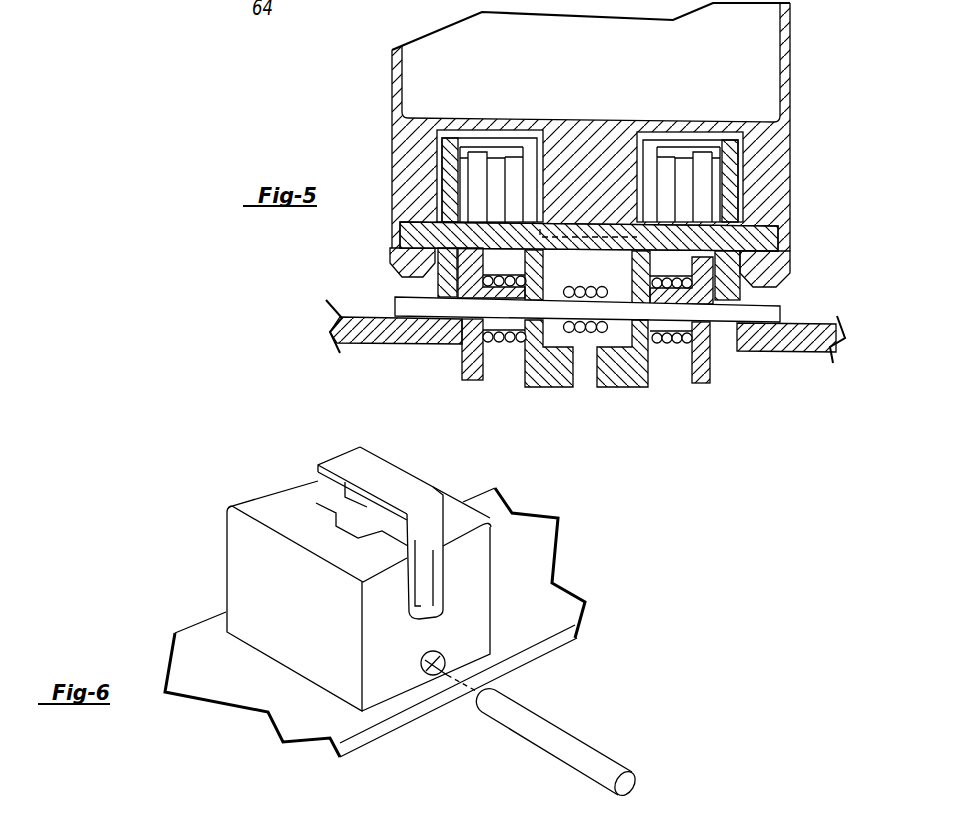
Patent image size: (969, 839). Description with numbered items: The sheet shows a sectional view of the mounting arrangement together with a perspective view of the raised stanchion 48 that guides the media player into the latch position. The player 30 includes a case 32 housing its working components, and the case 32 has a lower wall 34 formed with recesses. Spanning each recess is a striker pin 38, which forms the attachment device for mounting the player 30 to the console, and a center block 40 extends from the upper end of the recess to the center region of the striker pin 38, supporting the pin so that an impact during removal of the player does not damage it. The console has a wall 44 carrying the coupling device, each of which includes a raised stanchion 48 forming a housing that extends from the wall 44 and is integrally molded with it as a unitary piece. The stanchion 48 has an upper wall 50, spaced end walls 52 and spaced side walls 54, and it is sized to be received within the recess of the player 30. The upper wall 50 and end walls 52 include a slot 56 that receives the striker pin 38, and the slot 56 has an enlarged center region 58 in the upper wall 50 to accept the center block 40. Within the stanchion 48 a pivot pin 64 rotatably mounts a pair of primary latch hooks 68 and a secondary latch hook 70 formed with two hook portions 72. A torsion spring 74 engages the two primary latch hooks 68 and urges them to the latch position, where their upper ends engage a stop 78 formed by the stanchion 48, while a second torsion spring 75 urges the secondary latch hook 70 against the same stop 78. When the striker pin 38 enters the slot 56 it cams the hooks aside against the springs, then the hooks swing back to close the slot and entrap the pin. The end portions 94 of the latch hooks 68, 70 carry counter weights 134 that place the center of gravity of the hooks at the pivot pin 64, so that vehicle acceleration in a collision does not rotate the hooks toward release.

In FIG. 5, the player 30 is at (378, 126).
In FIG. 5, the case 32 is at (392, 148).
In FIG. 5, the striker pin 38 is at (758, 237).
In FIG. 5, the center block 40 is at (542, 163).
In FIG. 5, the wall 44 is at (368, 316).
In FIG. 6, the wall 44 is at (566, 623).
In FIG. 6, the raised stanchion 48 is at (215, 552).
In FIG. 6, the upper wall 50 is at (277, 518).
In FIG. 6, the end wall 52 is at (320, 484).
In FIG. 6, the side wall 54 is at (443, 492).
In FIG. 6, the slot 56 is at (461, 512).
In FIG. 6, the enlarged center region 58 is at (390, 505).
In FIG. 5, the pivot pin 64 is at (768, 312).
In FIG. 6, the pivot pin 64 is at (590, 752).
In FIG. 5, the primary latch hook 68 is at (477, 157).
In FIG. 5, the secondary latch hook 70 is at (620, 377).
In FIG. 5, the hook portion 72 is at (517, 163).
In FIG. 5, the torsion spring 74 is at (500, 338).
In FIG. 5, the torsion spring 75 is at (567, 332).
In FIG. 5, the stop 78 is at (503, 150).
In FIG. 5, the end portion 94 is at (593, 401).
In FIG. 5, the counter weight 134 is at (468, 373).
In FIG. 5, the lower wall 34 is at (622, 401).